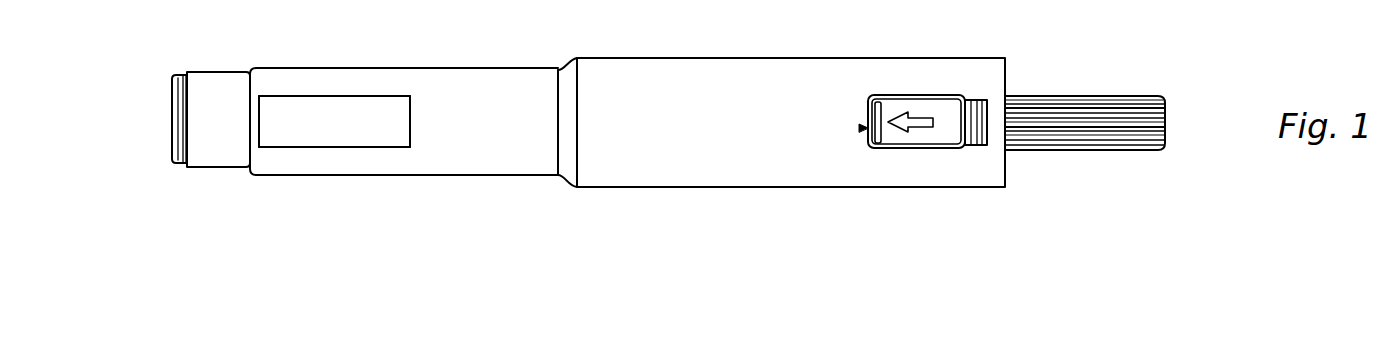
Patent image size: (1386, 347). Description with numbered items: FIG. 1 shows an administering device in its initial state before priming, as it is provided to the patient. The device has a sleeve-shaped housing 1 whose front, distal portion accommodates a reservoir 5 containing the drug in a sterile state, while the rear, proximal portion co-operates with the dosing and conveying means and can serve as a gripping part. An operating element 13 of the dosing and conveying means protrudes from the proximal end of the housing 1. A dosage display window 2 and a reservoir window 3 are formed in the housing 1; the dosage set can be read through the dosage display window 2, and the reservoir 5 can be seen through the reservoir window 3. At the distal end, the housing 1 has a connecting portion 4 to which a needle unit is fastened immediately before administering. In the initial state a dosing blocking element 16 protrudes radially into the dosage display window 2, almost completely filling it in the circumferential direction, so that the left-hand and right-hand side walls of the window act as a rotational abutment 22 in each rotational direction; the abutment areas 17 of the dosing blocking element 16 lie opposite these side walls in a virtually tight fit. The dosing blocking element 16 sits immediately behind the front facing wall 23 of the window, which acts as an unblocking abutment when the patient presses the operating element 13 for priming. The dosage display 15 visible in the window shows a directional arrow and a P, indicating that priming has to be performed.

The housing 1 is at (608, 73).
The dosage display window 2 is at (950, 147).
The reservoir window 3 is at (293, 95).
The connecting portion 4 is at (205, 85).
The reservoir 5 is at (345, 118).
The operating element 13 is at (1063, 100).
The dosage display 15 is at (927, 110).
The dosing blocking element 16 is at (882, 128).
The abutment areas 17 is at (888, 112).
The rotational abutment 22 is at (878, 101).
The front facing wall 23 is at (862, 128).